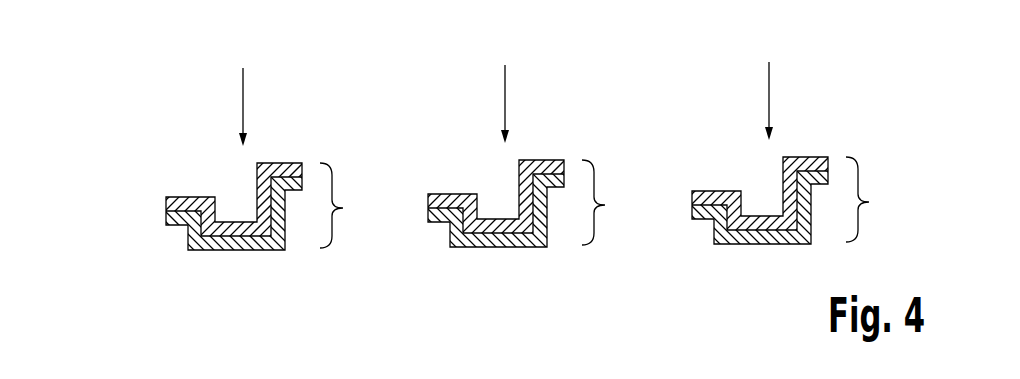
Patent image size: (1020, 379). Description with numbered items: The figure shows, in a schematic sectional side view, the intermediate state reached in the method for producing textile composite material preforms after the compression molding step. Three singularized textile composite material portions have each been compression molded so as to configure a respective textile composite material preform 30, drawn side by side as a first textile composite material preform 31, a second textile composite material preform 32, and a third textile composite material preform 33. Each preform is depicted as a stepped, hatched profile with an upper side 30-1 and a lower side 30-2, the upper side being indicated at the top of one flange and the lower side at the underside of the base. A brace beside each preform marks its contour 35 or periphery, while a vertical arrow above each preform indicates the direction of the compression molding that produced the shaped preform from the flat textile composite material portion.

The textile composite material preform 30 is at (134, 189).
The upper side 30-1 is at (498, 186).
The lower side 30-2 is at (488, 238).
The first textile composite material preform 31 is at (258, 159).
The second textile composite material preform 32 is at (520, 156).
The third textile composite material preform 33 is at (784, 153).
The contour 35 is at (614, 202).